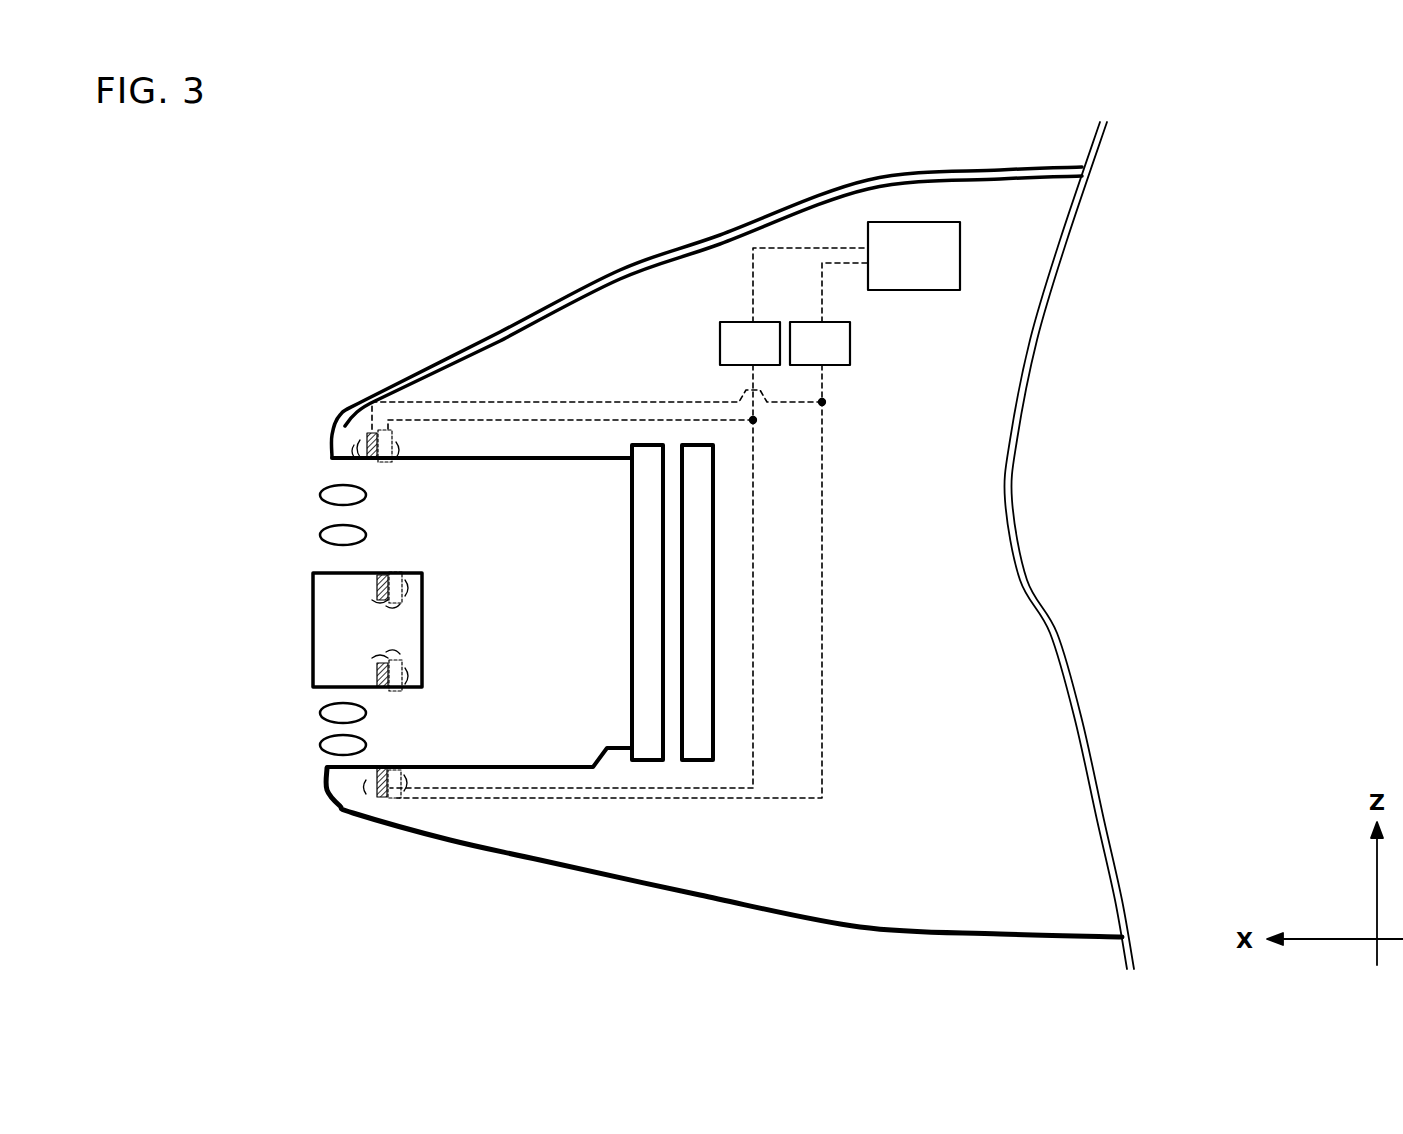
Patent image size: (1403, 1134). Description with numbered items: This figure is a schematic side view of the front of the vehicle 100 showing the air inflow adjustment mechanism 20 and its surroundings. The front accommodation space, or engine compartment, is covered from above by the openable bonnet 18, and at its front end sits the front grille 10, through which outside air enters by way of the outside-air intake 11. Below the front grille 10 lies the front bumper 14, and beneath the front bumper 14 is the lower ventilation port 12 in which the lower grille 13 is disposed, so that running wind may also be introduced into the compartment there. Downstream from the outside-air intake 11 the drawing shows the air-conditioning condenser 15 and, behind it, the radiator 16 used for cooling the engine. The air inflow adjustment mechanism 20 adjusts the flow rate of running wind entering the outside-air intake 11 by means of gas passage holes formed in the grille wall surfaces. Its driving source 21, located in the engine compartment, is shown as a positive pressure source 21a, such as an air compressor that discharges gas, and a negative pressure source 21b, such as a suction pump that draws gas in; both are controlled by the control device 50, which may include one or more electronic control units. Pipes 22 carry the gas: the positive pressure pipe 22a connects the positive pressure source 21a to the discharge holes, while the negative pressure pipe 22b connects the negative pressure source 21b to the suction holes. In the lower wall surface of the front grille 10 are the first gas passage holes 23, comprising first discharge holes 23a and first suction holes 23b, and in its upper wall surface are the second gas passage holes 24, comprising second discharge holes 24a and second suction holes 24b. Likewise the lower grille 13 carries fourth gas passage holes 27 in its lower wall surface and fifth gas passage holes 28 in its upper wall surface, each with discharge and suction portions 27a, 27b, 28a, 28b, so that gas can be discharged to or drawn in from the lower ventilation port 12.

The vehicle 100 is at (298, 143).
The front grille 10 is at (320, 535).
The outside-air intake 11 is at (330, 465).
The lower ventilation port 12 is at (340, 762).
The lower grille 13 is at (320, 745).
The front bumper 14 is at (423, 620).
The air-conditioning condenser 15 is at (647, 762).
The radiator 16 is at (703, 762).
The bonnet 18 is at (1037, 162).
The air inflow adjustment mechanism 20 is at (336, 573).
The driving source 21 is at (798, 136).
The positive pressure source 21a is at (730, 320).
The negative pressure source 21b is at (808, 322).
The pipe 22 is at (1146, 428).
The positive pressure pipe 22a is at (753, 677).
The negative pressure pipe 22b is at (822, 520).
The first gas passage holes 23 is at (370, 592).
The first discharge holes 23a is at (388, 573).
The first suction holes 23b is at (422, 577).
The second gas passage holes 24 is at (378, 431).
The second discharge holes 24a is at (395, 430).
The second suction holes 24b is at (330, 427).
The fourth gas passage holes 27 is at (388, 806).
The detection element of fourth sensor 27a is at (397, 778).
The housing of fourth sensor 27b is at (373, 783).
The fifth gas passage holes 28 is at (370, 692).
The detection element of third sensor 28a is at (422, 660).
The housing of third sensor 28b is at (370, 678).
The control device 50 is at (913, 220).